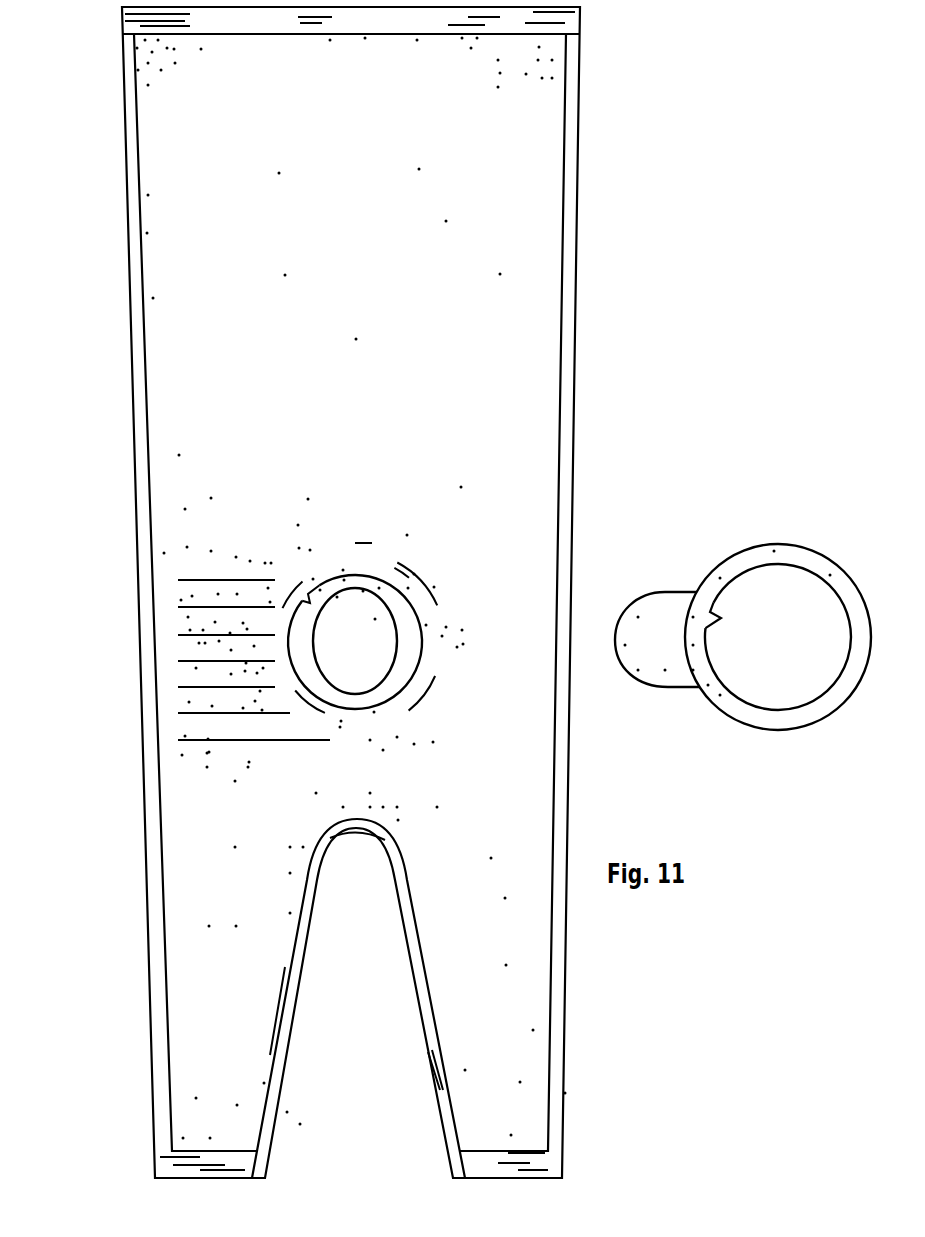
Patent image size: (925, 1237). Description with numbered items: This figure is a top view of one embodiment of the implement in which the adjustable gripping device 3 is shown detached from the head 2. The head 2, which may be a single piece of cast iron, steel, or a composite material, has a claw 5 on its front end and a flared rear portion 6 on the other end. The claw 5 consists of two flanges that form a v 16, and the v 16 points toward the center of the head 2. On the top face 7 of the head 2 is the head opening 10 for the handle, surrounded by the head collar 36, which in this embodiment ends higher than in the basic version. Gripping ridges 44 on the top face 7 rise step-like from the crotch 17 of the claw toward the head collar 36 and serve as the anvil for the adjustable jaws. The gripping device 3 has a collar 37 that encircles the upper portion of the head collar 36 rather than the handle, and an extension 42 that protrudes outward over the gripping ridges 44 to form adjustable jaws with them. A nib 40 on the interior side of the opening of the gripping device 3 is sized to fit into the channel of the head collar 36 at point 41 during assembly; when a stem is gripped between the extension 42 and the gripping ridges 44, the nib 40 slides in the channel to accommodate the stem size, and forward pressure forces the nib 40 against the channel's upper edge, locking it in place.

The head 2 is at (332, 592).
The gripping device 3 is at (747, 681).
The claw 5 is at (135, 832).
The flared rear portion 6 is at (362, 271).
The top face 7 is at (486, 410).
The head opening 10 is at (368, 657).
The v 16 is at (372, 1029).
The crotch 17 is at (357, 838).
The head collar 36 is at (388, 703).
The collar of the gripping device 37 is at (846, 703).
The nib 40 is at (723, 620).
The point 41 is at (307, 598).
The extension 42 is at (647, 592).
The gripping ridges 44 is at (185, 645).